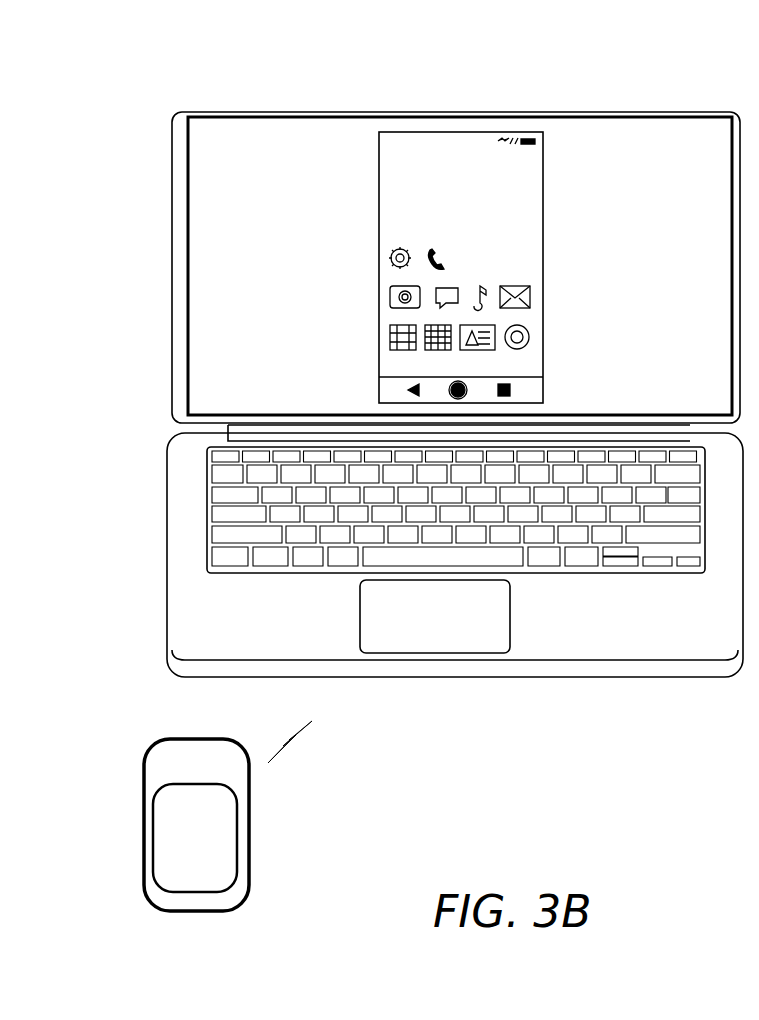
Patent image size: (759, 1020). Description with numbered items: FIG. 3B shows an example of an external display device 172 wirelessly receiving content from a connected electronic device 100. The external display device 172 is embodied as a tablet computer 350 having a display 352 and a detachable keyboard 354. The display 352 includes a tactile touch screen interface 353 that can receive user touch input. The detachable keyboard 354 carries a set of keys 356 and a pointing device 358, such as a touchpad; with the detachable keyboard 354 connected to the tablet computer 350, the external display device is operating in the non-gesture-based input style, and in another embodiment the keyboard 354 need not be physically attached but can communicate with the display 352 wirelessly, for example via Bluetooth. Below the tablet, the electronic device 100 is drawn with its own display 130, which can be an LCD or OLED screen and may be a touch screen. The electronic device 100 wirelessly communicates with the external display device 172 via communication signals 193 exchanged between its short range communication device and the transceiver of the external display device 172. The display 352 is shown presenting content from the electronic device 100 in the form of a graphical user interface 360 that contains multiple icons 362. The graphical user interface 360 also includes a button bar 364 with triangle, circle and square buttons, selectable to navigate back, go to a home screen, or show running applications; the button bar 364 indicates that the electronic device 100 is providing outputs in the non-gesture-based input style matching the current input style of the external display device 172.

The external display device 172 is at (258, 57).
The tablet computer 350 is at (389, 111).
The display 352 is at (174, 113).
The tactile touch screen interface 353 is at (236, 268).
The detachable keyboard 354 is at (168, 513).
The set of keys 356 is at (242, 536).
The pointing device 358 is at (448, 623).
The graphical user interface 360 is at (379, 197).
The icons 362 is at (390, 257).
The button bar 364 is at (375, 389).
The electronic device 100 is at (211, 770).
The display 130 is at (211, 815).
The communication signals 193 is at (290, 753).